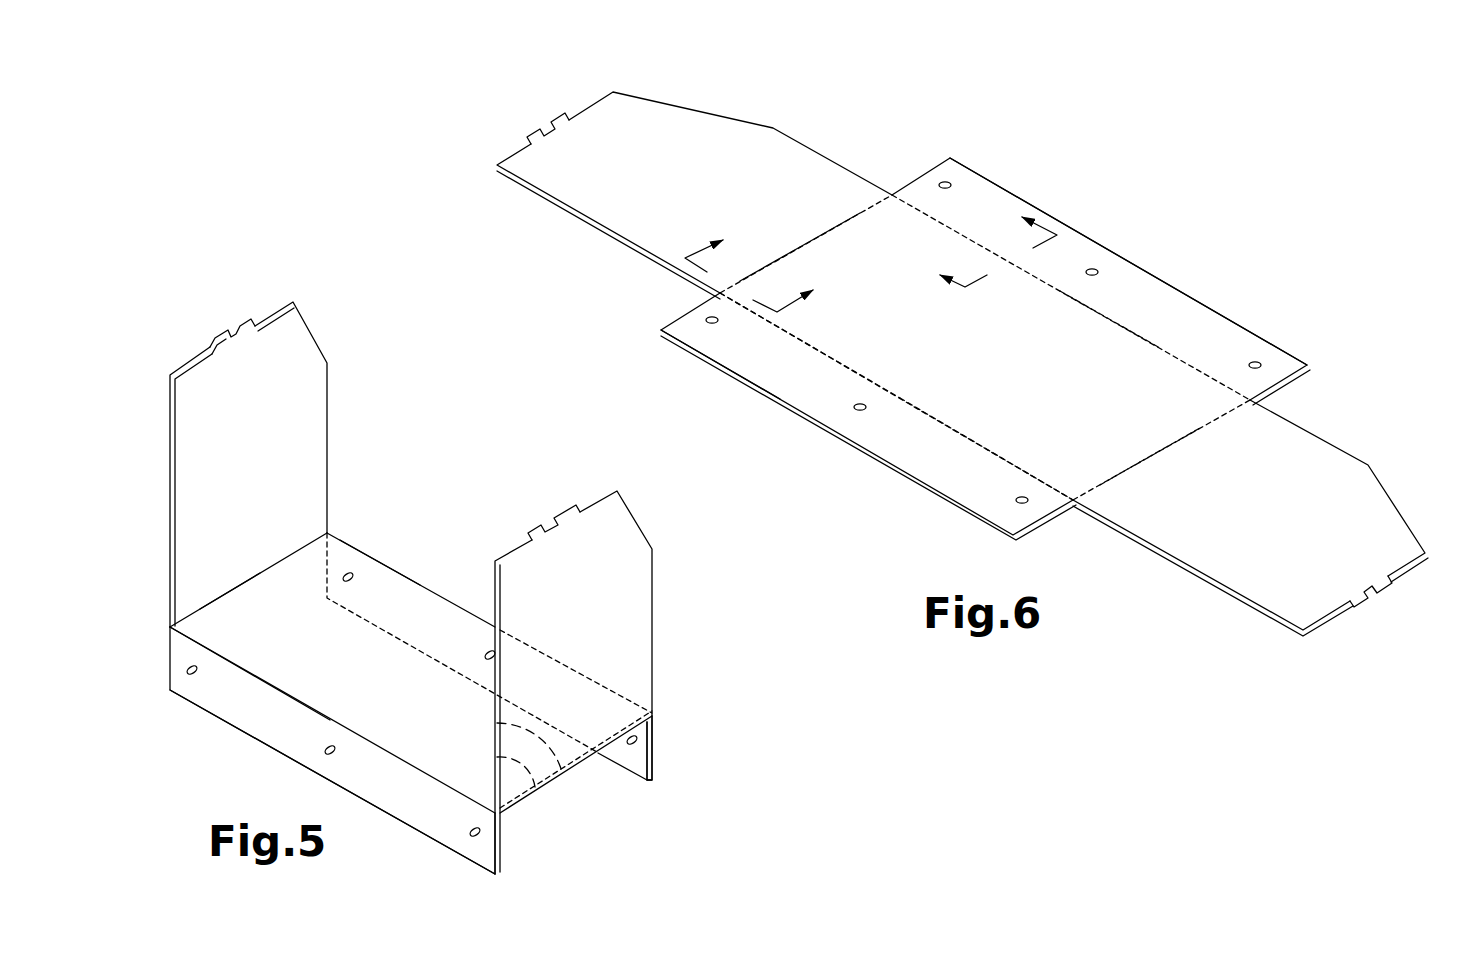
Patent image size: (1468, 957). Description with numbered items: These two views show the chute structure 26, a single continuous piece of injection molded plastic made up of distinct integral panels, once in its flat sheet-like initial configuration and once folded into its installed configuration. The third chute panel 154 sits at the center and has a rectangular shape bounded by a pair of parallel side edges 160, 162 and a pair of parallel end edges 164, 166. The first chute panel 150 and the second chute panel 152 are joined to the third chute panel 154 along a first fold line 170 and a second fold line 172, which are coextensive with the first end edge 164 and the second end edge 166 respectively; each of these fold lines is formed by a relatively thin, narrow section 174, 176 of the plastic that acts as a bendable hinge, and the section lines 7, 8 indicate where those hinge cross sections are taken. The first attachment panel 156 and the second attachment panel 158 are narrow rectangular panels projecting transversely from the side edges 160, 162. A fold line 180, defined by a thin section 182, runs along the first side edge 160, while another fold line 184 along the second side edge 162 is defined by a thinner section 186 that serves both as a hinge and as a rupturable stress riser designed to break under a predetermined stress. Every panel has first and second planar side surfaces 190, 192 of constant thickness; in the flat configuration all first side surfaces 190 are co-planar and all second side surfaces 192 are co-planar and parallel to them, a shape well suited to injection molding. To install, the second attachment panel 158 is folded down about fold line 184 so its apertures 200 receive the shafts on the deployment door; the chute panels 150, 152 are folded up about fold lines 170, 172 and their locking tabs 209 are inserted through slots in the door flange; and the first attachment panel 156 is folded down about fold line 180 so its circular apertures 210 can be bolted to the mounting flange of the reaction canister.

In FIG. 5, the chute structure 26 is at (355, 340).
In FIG. 6, the chute structure 26 is at (708, 80).
In FIG. 5, the first chute panel 150 is at (168, 472).
In FIG. 6, the first chute panel 150 is at (635, 219).
In FIG. 5, the second chute panel 152 is at (614, 580).
In FIG. 6, the second chute panel 152 is at (1190, 539).
In FIG. 5, the third chute panel 154 is at (233, 620).
In FIG. 6, the third chute panel 154 is at (735, 366).
In FIG. 5, the first attachment panel 156 is at (260, 727).
In FIG. 6, the first attachment panel 156 is at (907, 473).
In FIG. 5, the second attachment panel 158 is at (632, 762).
In FIG. 6, the second attachment panel 158 is at (1123, 271).
In FIG. 5, the first side edge 160 is at (317, 712).
In FIG. 6, the first side edge 160 is at (833, 361).
In FIG. 5, the second side edge 162 is at (462, 601).
In FIG. 6, the second side edge 162 is at (923, 210).
In FIG. 5, the first end edge 164 is at (282, 558).
In FIG. 6, the first end edge 164 is at (797, 246).
In FIG. 5, the second end edge 166 is at (496, 722).
In FIG. 6, the second end edge 166 is at (1203, 429).
In FIG. 5, the first fold line 170 is at (237, 588).
In FIG. 6, the first fold line 170 is at (770, 263).
In FIG. 5, the second fold line 172 is at (497, 757).
In FIG. 6, the second fold line 172 is at (1128, 465).
In FIG. 6, the thin narrow section 174 is at (833, 223).
In FIG. 6, the thin narrow section 176 is at (1173, 443).
In FIG. 5, the fold line 180 is at (260, 677).
In FIG. 6, the fold line 180 is at (888, 390).
In FIG. 6, the thin narrow section 182 is at (932, 414).
In FIG. 5, the fold line 184 is at (387, 561).
In FIG. 6, the fold line 184 is at (1053, 289).
In FIG. 6, the thin section 186 is at (1108, 320).
In FIG. 5, the first side surface 190 is at (193, 507).
In FIG. 6, the first side surface 190 is at (553, 178).
In FIG. 5, the second side surface 192 is at (628, 628).
In FIG. 5, the apertures 200 is at (357, 579).
In FIG. 6, the apertures 200 is at (958, 176).
In FIG. 5, the locking tabs 209 is at (245, 323).
In FIG. 6, the locking tabs 209 is at (562, 112).
In FIG. 5, the circular apertures 210 is at (182, 672).
In FIG. 6, the circular apertures 210 is at (702, 311).
In FIG. 6, the section line 7- 7 is at (758, 265).
In FIG. 6, the section line 8- 8 is at (982, 241).